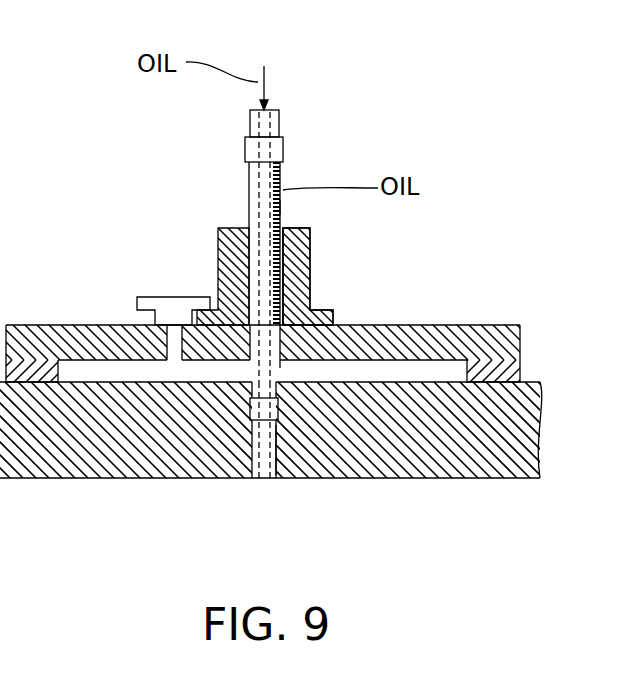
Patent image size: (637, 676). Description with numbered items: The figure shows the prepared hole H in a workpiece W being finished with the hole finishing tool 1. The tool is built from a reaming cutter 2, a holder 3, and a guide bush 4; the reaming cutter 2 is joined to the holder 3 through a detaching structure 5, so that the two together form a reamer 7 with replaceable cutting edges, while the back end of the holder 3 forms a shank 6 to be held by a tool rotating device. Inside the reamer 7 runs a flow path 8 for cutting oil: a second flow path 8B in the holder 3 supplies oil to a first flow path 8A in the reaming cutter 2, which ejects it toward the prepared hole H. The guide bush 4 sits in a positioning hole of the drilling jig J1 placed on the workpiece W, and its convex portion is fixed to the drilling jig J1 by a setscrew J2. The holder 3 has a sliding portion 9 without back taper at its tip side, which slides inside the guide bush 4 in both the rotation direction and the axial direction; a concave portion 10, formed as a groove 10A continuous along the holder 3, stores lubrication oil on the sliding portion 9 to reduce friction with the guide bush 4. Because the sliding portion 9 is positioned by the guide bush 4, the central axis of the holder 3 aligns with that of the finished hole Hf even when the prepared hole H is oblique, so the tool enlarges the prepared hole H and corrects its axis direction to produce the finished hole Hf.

The hole finishing tool 1 is at (380, 215).
The reaming cutter 2 is at (283, 378).
The holder 3 is at (249, 176).
The guide bush 4 is at (310, 278).
The detaching structure 5 is at (249, 220).
The shank 6 is at (250, 126).
The reamer 7 is at (290, 217).
The flow path 8 is at (247, 150).
The first flow path 8A is at (258, 480).
The second flow path 8B is at (258, 192).
The sliding portion 9 is at (283, 207).
The concave portion 10 is at (283, 181).
The groove 10A is at (283, 172).
The drilling jig J1 is at (470, 325).
The setscrew J2 is at (152, 297).
The workpiece W is at (405, 480).
The prepared hole H is at (262, 480).
The finished hole Hf is at (292, 480).